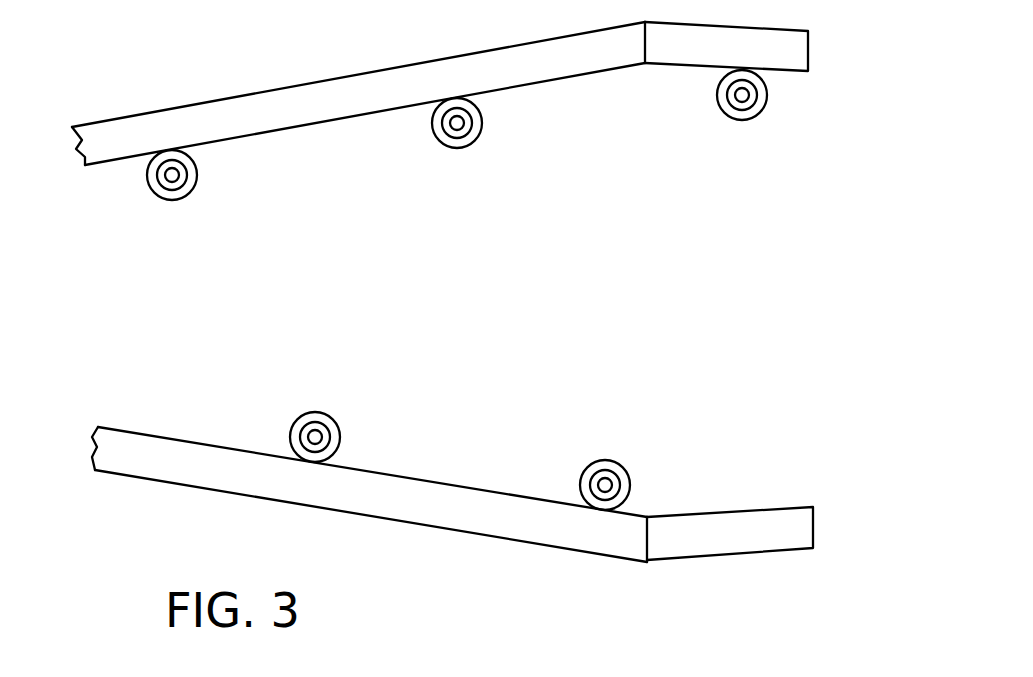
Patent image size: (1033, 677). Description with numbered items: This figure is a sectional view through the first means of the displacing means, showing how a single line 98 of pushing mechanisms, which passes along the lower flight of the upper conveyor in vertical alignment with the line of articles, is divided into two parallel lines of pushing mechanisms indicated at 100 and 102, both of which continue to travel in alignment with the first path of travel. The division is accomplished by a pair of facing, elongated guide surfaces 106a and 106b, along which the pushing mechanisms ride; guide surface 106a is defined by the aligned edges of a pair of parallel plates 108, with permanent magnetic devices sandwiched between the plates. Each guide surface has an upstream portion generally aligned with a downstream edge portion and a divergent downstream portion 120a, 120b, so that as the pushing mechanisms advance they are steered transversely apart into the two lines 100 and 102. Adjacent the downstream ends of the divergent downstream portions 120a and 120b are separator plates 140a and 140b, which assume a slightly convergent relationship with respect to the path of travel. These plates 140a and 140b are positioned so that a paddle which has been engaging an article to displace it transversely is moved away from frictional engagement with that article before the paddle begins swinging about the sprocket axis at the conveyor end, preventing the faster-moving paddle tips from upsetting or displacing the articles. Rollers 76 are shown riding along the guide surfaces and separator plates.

The roller 76 is at (182, 196).
The line of pushing mechanisms 98 is at (95, 305).
The line of pushing mechanisms 100 is at (507, 461).
The line of pushing mechanisms 102 is at (489, 131).
The elongated guide surface 106a is at (410, 458).
The elongated guide surface 106b is at (298, 146).
The plate 108 is at (415, 511).
The divergent downstream portion 120a is at (493, 490).
The divergent downstream portion 120b is at (593, 73).
The separator plate 140a is at (748, 547).
The separator plate 140b is at (742, 57).